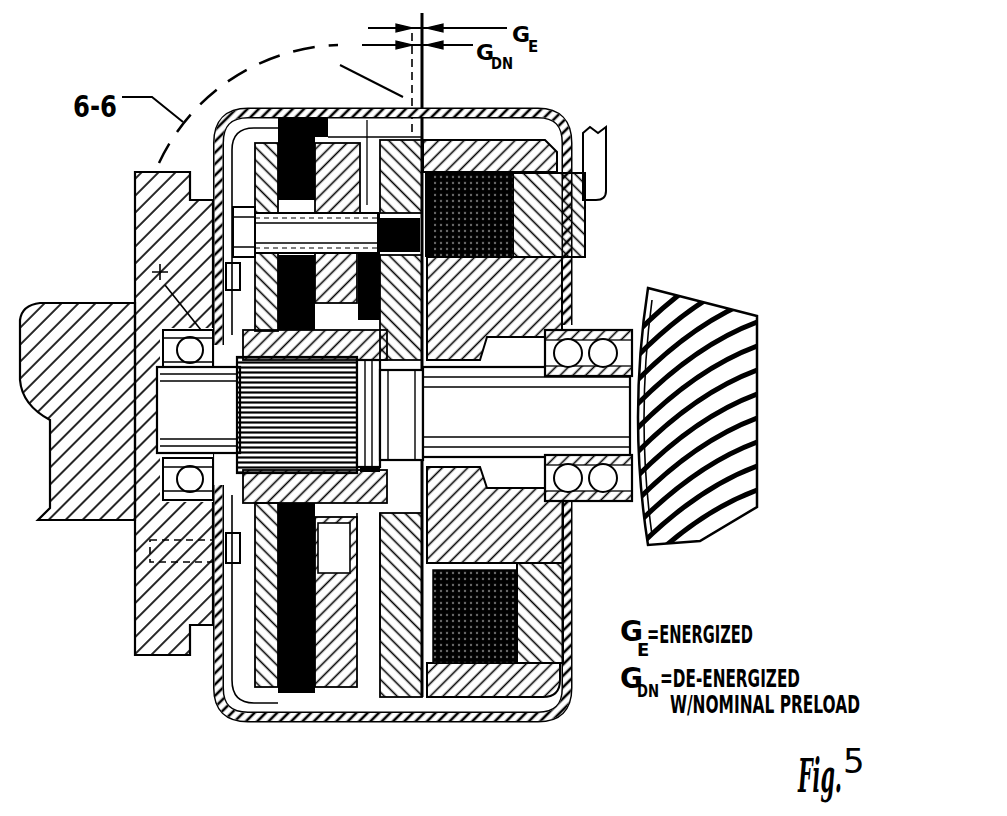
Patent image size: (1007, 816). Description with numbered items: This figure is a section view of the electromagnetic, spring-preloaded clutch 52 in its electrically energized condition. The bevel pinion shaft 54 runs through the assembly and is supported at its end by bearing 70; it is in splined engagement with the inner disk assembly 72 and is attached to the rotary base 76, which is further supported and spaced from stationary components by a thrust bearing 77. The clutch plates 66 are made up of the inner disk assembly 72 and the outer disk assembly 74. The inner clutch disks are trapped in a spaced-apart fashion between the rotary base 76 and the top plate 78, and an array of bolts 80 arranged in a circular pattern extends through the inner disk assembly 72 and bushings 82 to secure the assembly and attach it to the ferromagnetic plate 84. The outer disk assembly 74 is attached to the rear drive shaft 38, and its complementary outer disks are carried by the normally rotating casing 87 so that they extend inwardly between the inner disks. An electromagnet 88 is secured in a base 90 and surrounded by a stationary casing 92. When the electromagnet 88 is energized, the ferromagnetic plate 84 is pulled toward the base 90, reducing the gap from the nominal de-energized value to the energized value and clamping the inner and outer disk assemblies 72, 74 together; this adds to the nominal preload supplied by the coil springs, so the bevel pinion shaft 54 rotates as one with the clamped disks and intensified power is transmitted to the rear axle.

The rear drive shaft 38 is at (115, 303).
The electromagnetic clutch 52 is at (366, 205).
The bevel pinion shaft 54 is at (723, 305).
The clutch plates 66 is at (318, 122).
The bearing 70 is at (614, 325).
The inner disk assembly 72 is at (215, 678).
The outer disk assembly 74 is at (227, 711).
The rotary base 76 is at (358, 712).
The thrust bearing 77 is at (582, 327).
The top plate 78 is at (258, 708).
The bolts 80 is at (133, 234).
The bushings 82 is at (167, 250).
The ferromagnetic plate 84 is at (322, 712).
The normally rotating casing 87 is at (302, 722).
The electromagnet 88 is at (580, 240).
The base 90 is at (547, 567).
The stationary casing 92 is at (572, 550).